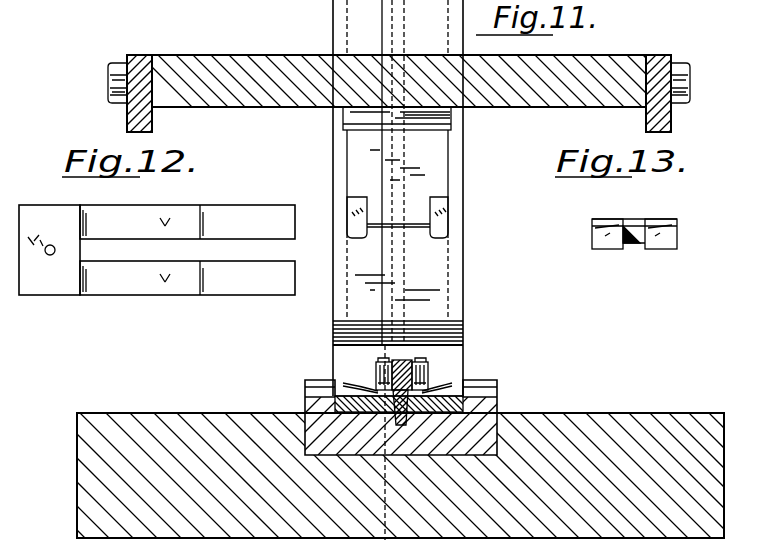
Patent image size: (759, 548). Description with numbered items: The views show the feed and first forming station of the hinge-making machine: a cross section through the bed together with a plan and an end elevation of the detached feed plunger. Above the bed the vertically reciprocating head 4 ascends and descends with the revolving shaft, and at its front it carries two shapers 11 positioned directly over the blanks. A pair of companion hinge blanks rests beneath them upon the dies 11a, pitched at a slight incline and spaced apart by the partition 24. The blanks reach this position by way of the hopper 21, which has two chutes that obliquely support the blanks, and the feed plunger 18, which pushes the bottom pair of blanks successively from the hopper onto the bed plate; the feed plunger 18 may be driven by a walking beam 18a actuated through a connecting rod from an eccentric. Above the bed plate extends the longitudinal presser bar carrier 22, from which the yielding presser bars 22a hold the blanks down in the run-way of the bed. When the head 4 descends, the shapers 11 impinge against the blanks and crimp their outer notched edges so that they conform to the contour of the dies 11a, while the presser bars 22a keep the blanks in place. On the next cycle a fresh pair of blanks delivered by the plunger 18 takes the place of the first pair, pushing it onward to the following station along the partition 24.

In FIG. 11, the vertically reciprocating head 4 is at (528, 106).
In FIG. 11, the shapers 11 is at (350, 210).
In FIG. 11, the dies 11a is at (517, 390).
In FIG. 12, the feed plunger 18 is at (49, 250).
In FIG. 13, the feed plunger 18 is at (638, 225).
In FIG. 12, the walking beam 18a is at (187, 250).
In FIG. 13, the walking beam 18a is at (690, 238).
In FIG. 11, the hopper 21 is at (398, 270).
In FIG. 11, the presser bar carrier 22 is at (400, 360).
In FIG. 11, the yielding presser bars 22a is at (489, 370).
In FIG. 11, the partition 24 is at (497, 405).